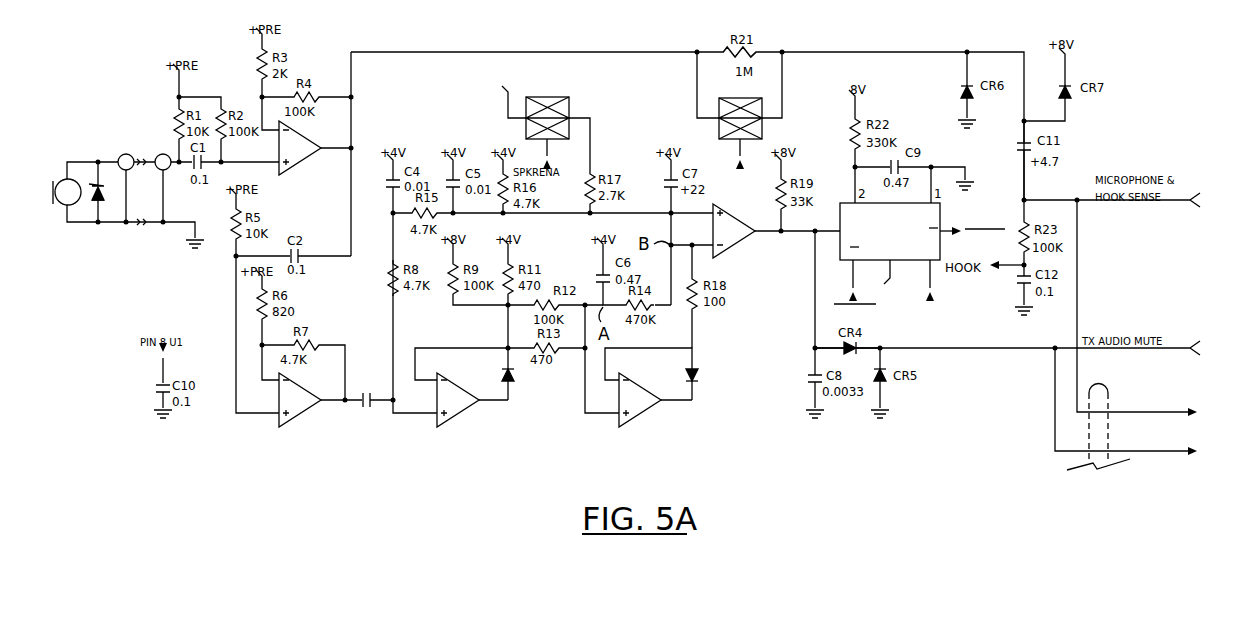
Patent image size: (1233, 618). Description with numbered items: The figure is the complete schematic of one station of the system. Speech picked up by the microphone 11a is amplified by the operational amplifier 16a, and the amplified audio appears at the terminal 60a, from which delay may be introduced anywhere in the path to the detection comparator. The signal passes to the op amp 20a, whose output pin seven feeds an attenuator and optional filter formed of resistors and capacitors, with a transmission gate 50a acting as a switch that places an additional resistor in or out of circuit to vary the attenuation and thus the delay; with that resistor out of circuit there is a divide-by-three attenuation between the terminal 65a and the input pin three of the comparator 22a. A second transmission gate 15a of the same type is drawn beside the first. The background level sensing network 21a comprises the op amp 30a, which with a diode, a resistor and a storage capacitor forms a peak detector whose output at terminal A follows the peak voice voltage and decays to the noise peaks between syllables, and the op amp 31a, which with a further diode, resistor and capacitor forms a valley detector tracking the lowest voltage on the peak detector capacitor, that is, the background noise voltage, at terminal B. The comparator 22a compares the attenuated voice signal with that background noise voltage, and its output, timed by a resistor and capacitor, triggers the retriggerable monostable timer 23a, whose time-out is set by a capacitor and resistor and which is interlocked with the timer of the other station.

The microphone 11a is at (66, 206).
The amplifier 16a is at (318, 168).
The terminal 60a is at (352, 147).
The transmission gate 50a is at (553, 97).
The microphone enable switch 15a is at (746, 98).
The comparator 22a is at (742, 222).
The retriggerable monostable timer 23a is at (949, 206).
The terminal 65a is at (390, 396).
The op amp 20a is at (310, 410).
The op amp 30a is at (478, 410).
The background level sensing network 21a is at (556, 420).
The op amp 31a is at (660, 415).